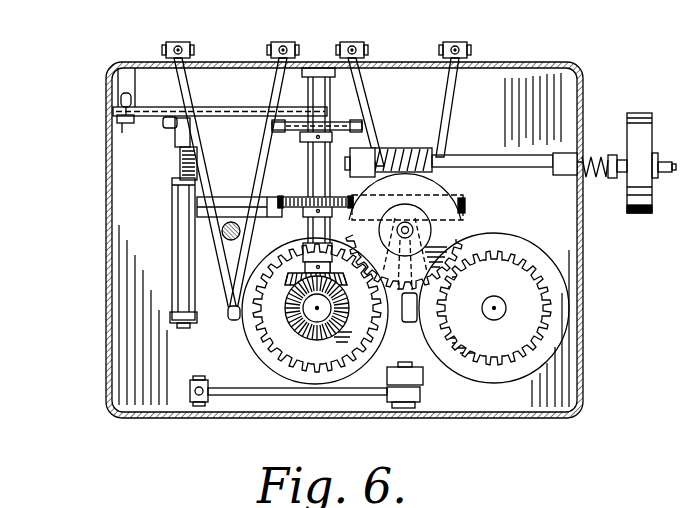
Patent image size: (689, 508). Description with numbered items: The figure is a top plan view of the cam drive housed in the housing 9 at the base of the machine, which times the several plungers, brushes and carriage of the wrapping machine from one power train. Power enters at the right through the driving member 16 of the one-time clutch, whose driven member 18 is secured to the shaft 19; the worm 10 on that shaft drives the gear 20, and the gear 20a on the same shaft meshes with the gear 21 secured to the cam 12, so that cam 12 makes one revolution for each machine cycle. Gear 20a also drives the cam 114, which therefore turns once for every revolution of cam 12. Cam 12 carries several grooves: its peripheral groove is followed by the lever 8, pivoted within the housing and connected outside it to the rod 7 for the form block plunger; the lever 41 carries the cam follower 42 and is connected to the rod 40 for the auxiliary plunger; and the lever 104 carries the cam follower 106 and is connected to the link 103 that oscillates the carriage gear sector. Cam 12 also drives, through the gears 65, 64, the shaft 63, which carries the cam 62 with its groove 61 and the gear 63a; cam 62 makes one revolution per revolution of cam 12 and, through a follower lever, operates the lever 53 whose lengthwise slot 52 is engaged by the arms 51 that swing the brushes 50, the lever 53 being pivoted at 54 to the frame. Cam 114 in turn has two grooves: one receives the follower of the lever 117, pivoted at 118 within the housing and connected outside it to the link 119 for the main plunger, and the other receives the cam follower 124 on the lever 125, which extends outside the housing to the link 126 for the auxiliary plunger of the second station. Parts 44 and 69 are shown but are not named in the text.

The housing 9 is at (110, 90).
The rod 40 is at (180, 44).
The rod 7 is at (285, 45).
The link 126 is at (354, 45).
The link 119 is at (458, 45).
The lever 41 is at (184, 87).
The lever 8 is at (274, 90).
The gear 65 is at (262, 329).
The lever 125 is at (350, 120).
The lever 117 is at (448, 112).
The slot 52 is at (229, 116).
The lever 53 is at (140, 112).
The pivot 54 is at (127, 121).
The arms 51 is at (176, 128).
The brushes 50 is at (180, 160).
The guide rod 44 is at (182, 230).
The cam 62 is at (328, 122).
The gear 64 is at (265, 212).
The groove 61 is at (340, 72).
The shaft 63 is at (313, 95).
The bearing sleeve 69 is at (323, 153).
The gear 63a is at (290, 194).
The gear 21 is at (362, 322).
The cam 12 is at (272, 360).
The cam follower 42 is at (285, 315).
The gear 20 is at (445, 190).
The pivot 118 is at (467, 205).
The cam follower 124 is at (409, 325).
The worm 10 is at (398, 150).
The shaft 19 is at (455, 165).
The driven member 18 is at (627, 128).
The driving member 16 is at (645, 146).
The gear 20a is at (490, 226).
The cam 114 is at (487, 383).
The lever 104 is at (255, 396).
The link 103 is at (192, 398).
The cam follower 106 is at (388, 385).